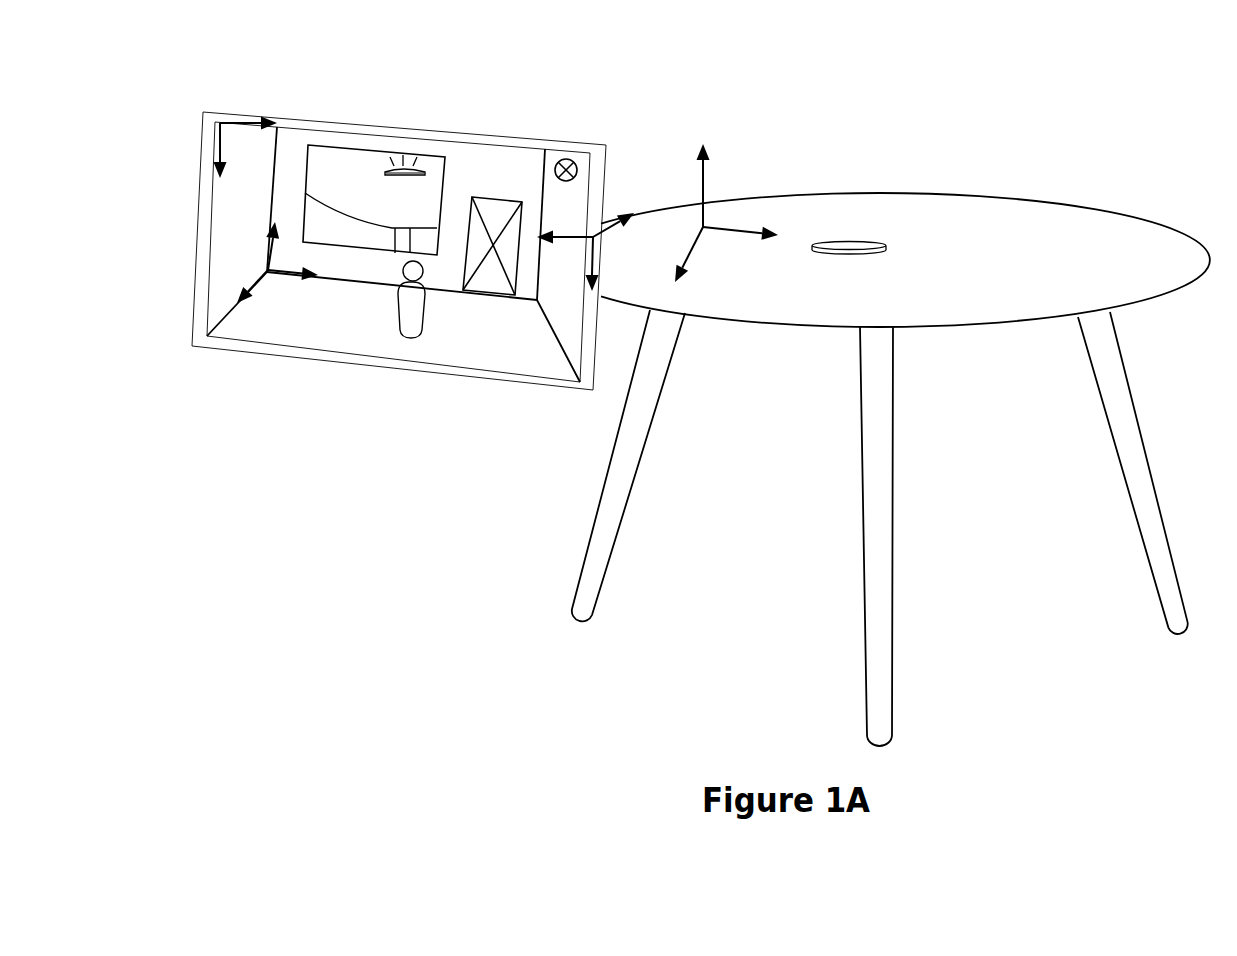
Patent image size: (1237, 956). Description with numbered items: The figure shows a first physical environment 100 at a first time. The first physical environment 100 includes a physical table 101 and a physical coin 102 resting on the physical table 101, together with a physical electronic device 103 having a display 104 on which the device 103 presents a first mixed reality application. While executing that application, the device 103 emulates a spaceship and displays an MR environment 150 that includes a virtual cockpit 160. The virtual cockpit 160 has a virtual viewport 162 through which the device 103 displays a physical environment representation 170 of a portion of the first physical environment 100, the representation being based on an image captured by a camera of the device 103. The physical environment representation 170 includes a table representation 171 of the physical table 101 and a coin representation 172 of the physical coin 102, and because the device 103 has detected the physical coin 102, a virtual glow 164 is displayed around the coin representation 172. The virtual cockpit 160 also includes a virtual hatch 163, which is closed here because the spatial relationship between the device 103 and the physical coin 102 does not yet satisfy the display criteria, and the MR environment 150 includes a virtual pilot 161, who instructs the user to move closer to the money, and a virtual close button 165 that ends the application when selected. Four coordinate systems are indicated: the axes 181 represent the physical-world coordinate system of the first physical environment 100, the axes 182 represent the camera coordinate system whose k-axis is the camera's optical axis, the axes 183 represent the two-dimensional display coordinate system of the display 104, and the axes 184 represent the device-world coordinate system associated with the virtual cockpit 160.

The first physical environment 100 is at (1078, 80).
The physical table 101 is at (912, 193).
The physical coin 102 is at (850, 241).
The physical electronic device 103 is at (352, 118).
The display 104 is at (425, 134).
The MR environment 150 is at (498, 147).
The virtual cockpit 160 is at (535, 185).
The virtual pilot 161 is at (420, 334).
The virtual viewport 162 is at (389, 251).
The virtual hatch 163 is at (475, 294).
The virtual glow 164 is at (422, 163).
The virtual close button 165 is at (566, 158).
The physical environment representation 170 is at (352, 175).
The table representation 171 is at (367, 221).
The coin representation 172 is at (390, 176).
The axes 181 is at (705, 182).
The axes 182 is at (594, 250).
The axes 183 is at (234, 123).
The axes 184 is at (263, 280).